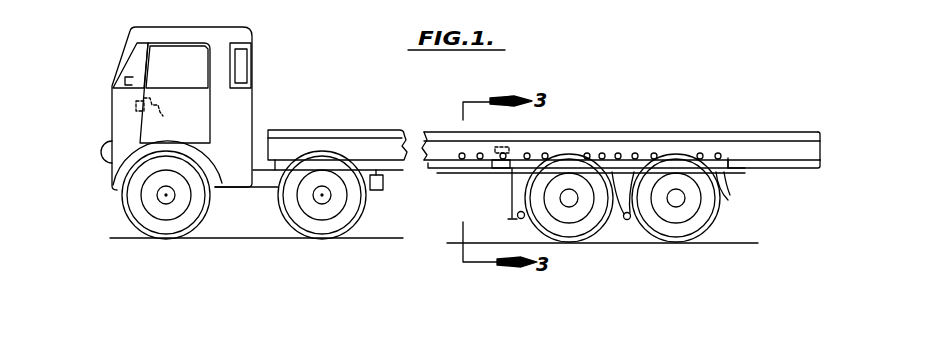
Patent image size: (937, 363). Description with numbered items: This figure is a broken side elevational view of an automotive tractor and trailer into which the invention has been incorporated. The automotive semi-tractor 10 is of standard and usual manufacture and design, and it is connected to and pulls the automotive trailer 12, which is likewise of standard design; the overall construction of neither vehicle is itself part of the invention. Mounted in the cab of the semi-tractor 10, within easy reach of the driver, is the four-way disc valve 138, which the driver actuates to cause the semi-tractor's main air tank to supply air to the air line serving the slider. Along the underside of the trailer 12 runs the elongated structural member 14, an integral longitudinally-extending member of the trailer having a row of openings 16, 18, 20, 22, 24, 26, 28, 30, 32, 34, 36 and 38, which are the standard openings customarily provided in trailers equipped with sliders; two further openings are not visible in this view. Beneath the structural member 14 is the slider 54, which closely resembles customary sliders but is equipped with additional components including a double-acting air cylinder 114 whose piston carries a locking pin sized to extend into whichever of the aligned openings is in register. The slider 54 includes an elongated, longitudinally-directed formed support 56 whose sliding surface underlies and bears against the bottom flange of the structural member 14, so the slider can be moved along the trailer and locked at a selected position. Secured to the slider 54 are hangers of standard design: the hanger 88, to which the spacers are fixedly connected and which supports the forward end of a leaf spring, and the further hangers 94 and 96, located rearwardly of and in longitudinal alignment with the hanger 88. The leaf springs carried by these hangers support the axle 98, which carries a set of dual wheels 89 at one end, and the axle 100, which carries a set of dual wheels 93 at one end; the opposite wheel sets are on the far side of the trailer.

The automotive semi-tractor 10 is at (258, 76).
The four-way disc valve 138 is at (167, 114).
The automotive trailer 12 is at (410, 120).
The elongated structural member 14 is at (402, 163).
The opening 16 is at (459, 160).
The opening 18 is at (479, 160).
The opening 20 is at (525, 160).
The opening 22 is at (511, 217).
The opening 24 is at (547, 153).
The opening 26 is at (588, 153).
The opening 28 is at (604, 153).
The opening 30 is at (620, 153).
The opening 32 is at (637, 153).
The opening 34 is at (656, 153).
The opening 36 is at (701, 153).
The opening 38 is at (719, 153).
The slider 54 is at (733, 155).
The formed support 56 is at (730, 166).
The hanger 88 is at (520, 219).
The set of dual wheels 89 is at (577, 232).
The set of dual wheels 93 is at (697, 224).
The hanger 94 is at (625, 220).
The hanger 96 is at (723, 203).
The axle 98 is at (573, 204).
The axle 100 is at (676, 203).
The double-acting air cylinder 114 is at (505, 128).